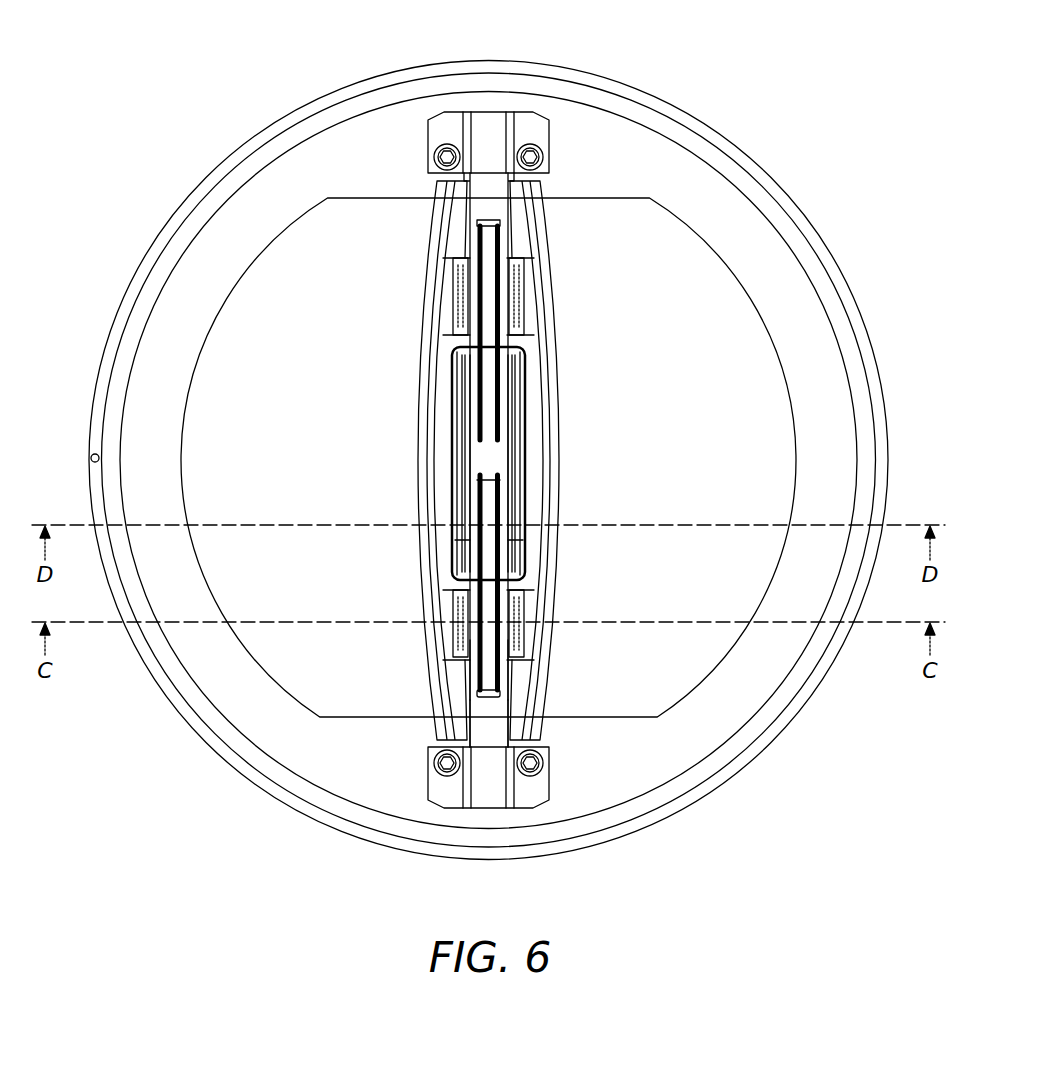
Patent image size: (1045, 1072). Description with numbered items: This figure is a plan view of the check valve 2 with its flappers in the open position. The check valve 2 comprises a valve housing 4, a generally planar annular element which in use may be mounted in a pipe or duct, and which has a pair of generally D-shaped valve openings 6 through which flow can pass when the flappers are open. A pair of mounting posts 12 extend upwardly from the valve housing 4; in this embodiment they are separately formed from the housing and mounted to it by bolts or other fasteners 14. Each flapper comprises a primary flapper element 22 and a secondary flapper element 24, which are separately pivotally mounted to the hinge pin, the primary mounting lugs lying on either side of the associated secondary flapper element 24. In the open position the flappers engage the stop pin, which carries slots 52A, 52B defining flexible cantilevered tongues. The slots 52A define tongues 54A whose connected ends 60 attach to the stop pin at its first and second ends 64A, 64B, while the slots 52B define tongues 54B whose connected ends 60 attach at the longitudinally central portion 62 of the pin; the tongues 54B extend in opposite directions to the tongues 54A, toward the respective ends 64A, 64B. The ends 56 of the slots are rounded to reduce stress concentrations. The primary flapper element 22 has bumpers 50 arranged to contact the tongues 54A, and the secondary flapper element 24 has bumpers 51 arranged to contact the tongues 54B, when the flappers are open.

The check valve 2 is at (768, 105).
The valve housing 4 is at (179, 195).
The valve openings 6 is at (216, 468).
The mounting posts 12 is at (488, 122).
The fasteners 14 is at (433, 157).
The primary flapper element 22 is at (425, 314).
The secondary flapper element 24 is at (465, 427).
The bumpers 50 is at (513, 298).
The bumpers 51 is at (520, 385).
The slots 52A is at (502, 645).
The slots 52B is at (502, 497).
The flexible cantilevered tongues 54A is at (505, 593).
The flexible cantilevered tongues 54B is at (505, 545).
The end of slot 56 is at (483, 473).
The connected end 60 is at (473, 678).
The longitudinally central portion 62 is at (492, 458).
The first end of stop pin 64A is at (483, 202).
The second end of stop pin 64B is at (482, 720).